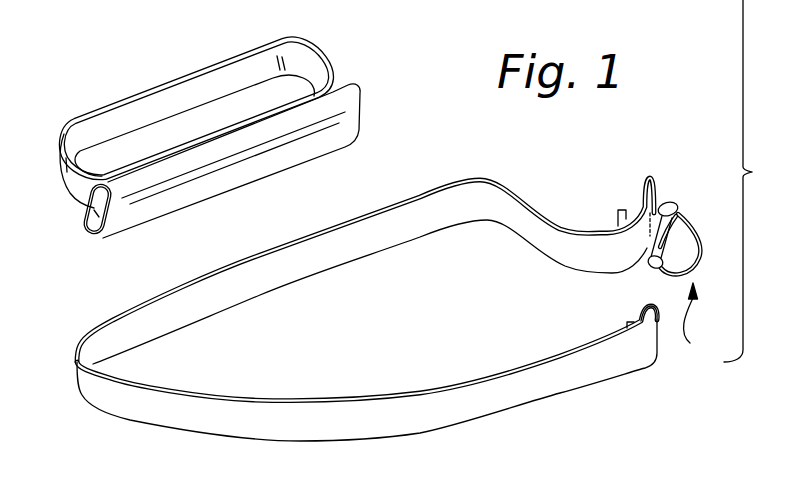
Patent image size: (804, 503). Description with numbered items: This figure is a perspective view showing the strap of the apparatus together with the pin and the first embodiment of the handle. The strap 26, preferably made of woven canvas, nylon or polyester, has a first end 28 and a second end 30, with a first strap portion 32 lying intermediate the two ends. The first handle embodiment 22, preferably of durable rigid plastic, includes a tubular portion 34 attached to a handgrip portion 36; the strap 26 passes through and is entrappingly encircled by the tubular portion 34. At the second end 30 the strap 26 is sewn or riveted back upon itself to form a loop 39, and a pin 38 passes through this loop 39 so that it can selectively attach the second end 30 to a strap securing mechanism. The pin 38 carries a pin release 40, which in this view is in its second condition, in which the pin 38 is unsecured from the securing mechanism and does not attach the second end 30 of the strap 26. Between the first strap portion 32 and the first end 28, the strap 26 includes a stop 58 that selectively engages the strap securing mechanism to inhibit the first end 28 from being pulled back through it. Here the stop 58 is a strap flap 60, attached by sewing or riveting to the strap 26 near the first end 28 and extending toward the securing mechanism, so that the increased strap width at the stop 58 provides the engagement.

The first handle embodiment 22 is at (342, 43).
The strap 26 is at (106, 391).
The first end 28 is at (652, 178).
The second end 30 is at (633, 372).
The first strap portion 32 is at (503, 213).
The tubular portion 34 is at (320, 137).
The handgrip portion 36 is at (220, 65).
The pin 38 is at (680, 232).
The loop 39 is at (651, 303).
The pin release 40 is at (702, 320).
The stop 58 is at (633, 193).
The strap flap 60 is at (619, 210).